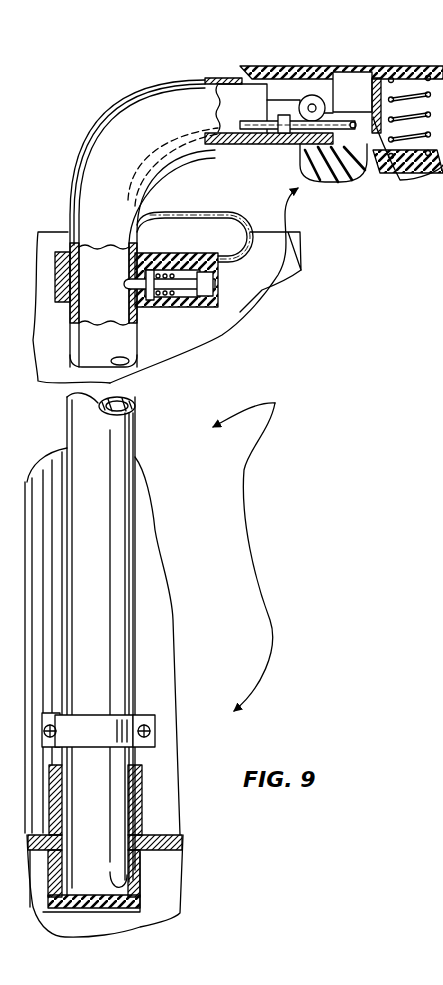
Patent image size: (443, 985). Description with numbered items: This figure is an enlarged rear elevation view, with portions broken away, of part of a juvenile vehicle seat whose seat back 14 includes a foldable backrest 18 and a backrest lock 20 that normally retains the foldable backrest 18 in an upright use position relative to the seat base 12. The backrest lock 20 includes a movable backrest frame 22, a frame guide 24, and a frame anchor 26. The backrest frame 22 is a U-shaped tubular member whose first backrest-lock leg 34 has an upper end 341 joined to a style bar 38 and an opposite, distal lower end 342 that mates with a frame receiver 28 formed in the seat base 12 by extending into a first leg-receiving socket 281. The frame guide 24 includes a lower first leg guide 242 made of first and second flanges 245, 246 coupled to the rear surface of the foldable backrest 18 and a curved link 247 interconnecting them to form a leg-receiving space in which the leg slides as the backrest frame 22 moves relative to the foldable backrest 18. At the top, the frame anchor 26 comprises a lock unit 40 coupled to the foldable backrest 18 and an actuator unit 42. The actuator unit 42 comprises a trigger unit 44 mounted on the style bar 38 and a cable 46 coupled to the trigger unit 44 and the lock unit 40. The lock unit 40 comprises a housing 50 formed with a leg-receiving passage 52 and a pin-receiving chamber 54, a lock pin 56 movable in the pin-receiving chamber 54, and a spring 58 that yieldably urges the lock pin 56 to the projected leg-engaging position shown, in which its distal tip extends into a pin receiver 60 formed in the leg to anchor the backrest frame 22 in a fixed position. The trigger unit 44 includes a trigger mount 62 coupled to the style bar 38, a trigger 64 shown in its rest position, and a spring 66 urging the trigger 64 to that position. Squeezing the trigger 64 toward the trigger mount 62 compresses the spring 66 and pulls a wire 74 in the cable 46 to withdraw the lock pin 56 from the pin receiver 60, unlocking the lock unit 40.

The seat base 12 is at (187, 890).
The seat back 14 is at (62, 167).
The foldable backrest 18 is at (250, 330).
The backrest lock 20 is at (316, 306).
The movable backrest frame 22 is at (95, 127).
The frame guide 24 is at (156, 720).
The frame anchor 26 is at (252, 291).
The frame receiver 28 is at (153, 913).
The first backrest-lock leg 34 is at (110, 542).
The style bar 38 is at (192, 87).
The lock unit 40 is at (160, 320).
The actuator unit 42 is at (315, 63).
The trigger unit 44 is at (371, 185).
The cable 46 is at (202, 208).
The housing 50 is at (230, 300).
The leg-receiving passage 52 is at (66, 282).
The pin-receiving chamber 54 is at (165, 265).
The lock pin 56 is at (126, 279).
The spring 58 is at (178, 300).
The pin receiver 60 is at (127, 286).
The trigger mount 62 is at (360, 72).
The trigger 64 is at (371, 173).
The spring 66 is at (407, 93).
The wire 74 is at (313, 124).
The lower first leg guide 242 is at (100, 710).
The first flange 245 is at (48, 712).
The second flange 246 is at (132, 701).
The curved link 247 is at (442, 670).
The first leg-receiving socket 281 is at (100, 877).
The upper end 341 is at (88, 245).
The lower end 342 is at (140, 893).